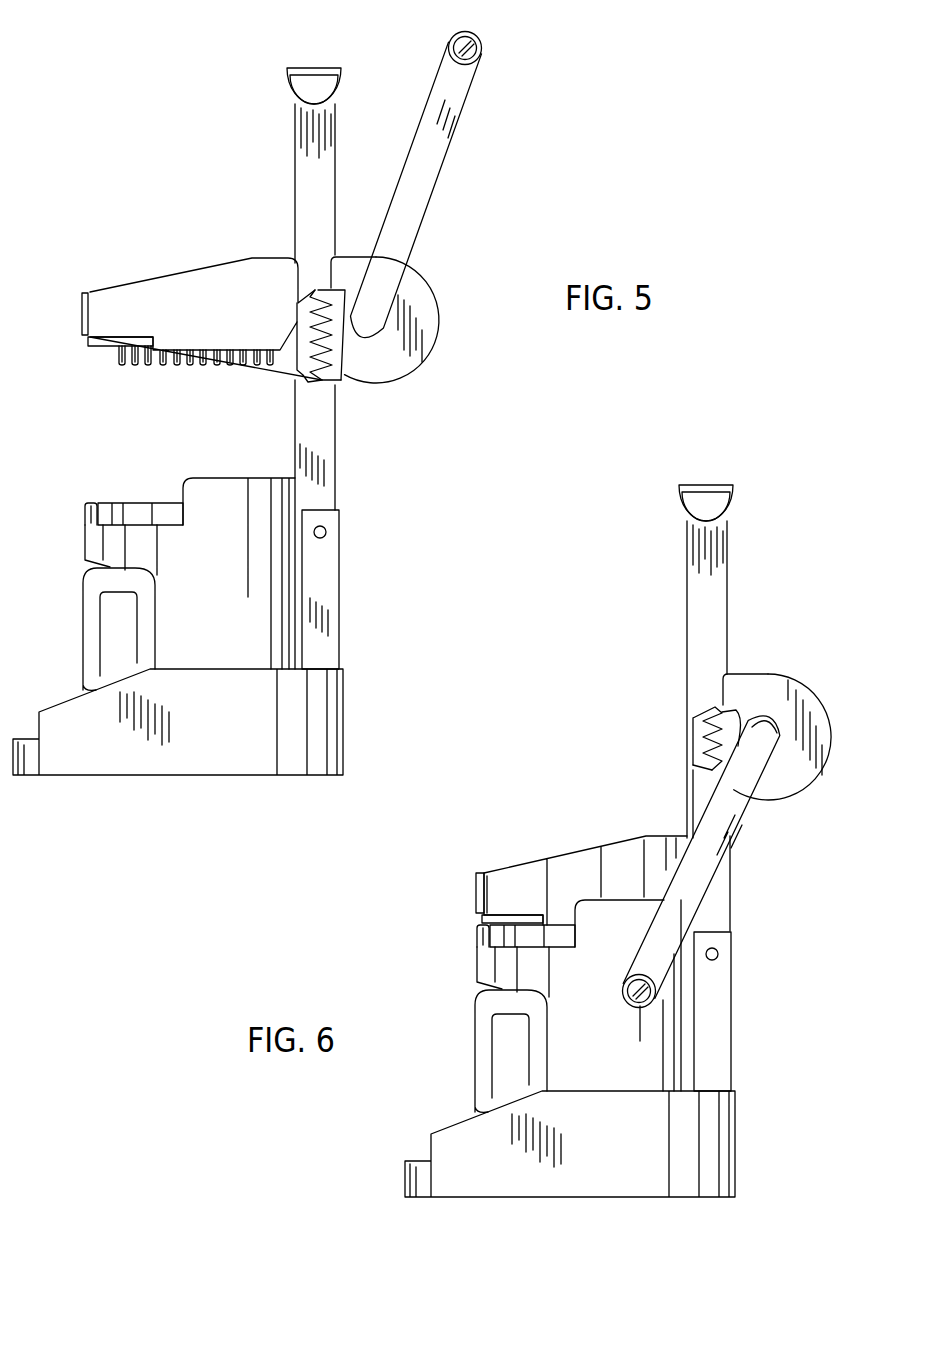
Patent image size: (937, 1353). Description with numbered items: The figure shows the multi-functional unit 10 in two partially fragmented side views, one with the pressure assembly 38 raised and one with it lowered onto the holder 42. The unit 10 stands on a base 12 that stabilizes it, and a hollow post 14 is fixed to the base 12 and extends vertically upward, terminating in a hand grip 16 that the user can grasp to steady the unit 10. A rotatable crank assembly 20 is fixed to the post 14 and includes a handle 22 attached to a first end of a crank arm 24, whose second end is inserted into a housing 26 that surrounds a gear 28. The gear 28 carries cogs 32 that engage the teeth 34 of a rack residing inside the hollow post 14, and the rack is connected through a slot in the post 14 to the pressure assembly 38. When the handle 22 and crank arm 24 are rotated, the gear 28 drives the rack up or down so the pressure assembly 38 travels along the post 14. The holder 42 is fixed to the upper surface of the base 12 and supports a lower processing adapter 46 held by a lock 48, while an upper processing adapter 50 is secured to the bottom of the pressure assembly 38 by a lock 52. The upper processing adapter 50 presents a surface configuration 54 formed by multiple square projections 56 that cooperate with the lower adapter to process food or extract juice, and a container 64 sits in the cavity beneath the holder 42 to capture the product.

In FIG. 5, the multi-functional unit 10 is at (57, 168).
In FIG. 6, the multi-functional unit 10 is at (628, 583).
In FIG. 5, the base 12 is at (327, 737).
In FIG. 6, the base 12 is at (730, 1154).
In FIG. 5, the post 14 is at (304, 146).
In FIG. 6, the post 14 is at (717, 554).
In FIG. 5, the hand grip 16 is at (304, 68).
In FIG. 6, the hand grip 16 is at (710, 490).
In FIG. 5, the rotatable crank assembly 20 is at (445, 232).
In FIG. 5, the handle 22 is at (471, 34).
In FIG. 6, the handle 22 is at (655, 998).
In FIG. 5, the crank arm 24 is at (446, 118).
In FIG. 6, the crank arm 24 is at (687, 897).
In FIG. 5, the housing 26 is at (427, 298).
In FIG. 6, the housing 26 is at (800, 692).
In FIG. 5, the gear 28 is at (337, 328).
In FIG. 6, the gear 28 is at (733, 722).
In FIG. 5, the cogs 32 is at (338, 380).
In FIG. 6, the cogs 32 is at (723, 752).
In FIG. 5, the teeth 34 is at (309, 302).
In FIG. 6, the teeth 34 is at (703, 744).
In FIG. 5, the pressure assembly 38 is at (89, 286).
In FIG. 6, the pressure assembly 38 is at (542, 844).
In FIG. 5, the holder 42 is at (232, 570).
In FIG. 6, the holder 42 is at (617, 1025).
In FIG. 5, the lower processing adapter 46 is at (120, 503).
In FIG. 6, the lower processing adapter 46 is at (501, 932).
In FIG. 5, the lock 48 is at (86, 510).
In FIG. 6, the lock 48 is at (479, 935).
In FIG. 5, the upper processing adapter 50 is at (90, 345).
In FIG. 6, the upper processing adapter 50 is at (478, 917).
In FIG. 5, the lock 52 is at (84, 311).
In FIG. 6, the lock 52 is at (478, 890).
In FIG. 5, the surface configuration 54 is at (193, 376).
In FIG. 5, the square projections 56 is at (132, 361).
In FIG. 5, the container 64 is at (104, 580).
In FIG. 6, the container 64 is at (482, 1036).